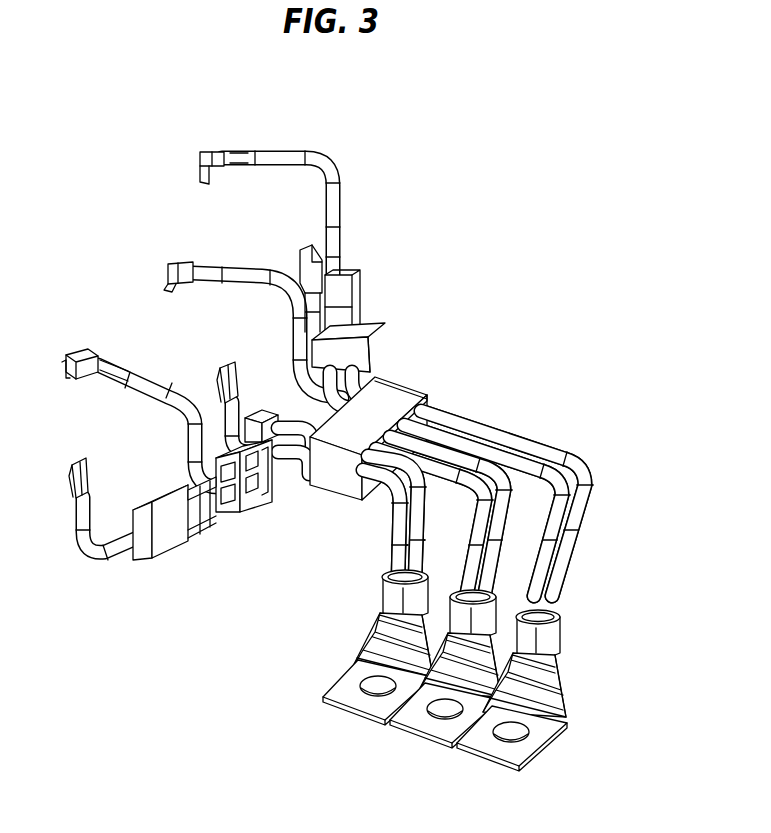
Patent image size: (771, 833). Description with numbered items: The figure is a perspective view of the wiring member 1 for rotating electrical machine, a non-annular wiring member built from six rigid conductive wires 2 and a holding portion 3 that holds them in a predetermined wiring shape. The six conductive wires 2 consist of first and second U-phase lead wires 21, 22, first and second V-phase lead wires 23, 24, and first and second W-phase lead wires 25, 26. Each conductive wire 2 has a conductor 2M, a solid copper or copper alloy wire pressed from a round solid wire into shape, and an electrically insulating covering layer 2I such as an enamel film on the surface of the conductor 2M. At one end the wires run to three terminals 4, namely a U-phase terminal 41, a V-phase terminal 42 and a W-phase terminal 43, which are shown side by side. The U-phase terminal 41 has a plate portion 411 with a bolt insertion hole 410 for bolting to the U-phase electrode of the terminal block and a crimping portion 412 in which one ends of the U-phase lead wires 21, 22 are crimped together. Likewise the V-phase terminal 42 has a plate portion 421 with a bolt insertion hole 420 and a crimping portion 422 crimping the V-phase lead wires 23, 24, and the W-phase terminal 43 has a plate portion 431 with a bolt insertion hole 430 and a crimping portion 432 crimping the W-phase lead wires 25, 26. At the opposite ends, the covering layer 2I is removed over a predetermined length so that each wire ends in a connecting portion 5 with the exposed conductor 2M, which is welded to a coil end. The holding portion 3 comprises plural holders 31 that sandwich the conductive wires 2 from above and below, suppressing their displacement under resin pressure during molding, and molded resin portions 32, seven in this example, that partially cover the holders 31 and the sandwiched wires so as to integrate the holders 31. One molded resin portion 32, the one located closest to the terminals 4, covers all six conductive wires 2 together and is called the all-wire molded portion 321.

The wiring member for rotating electrical machine 1 is at (588, 203).
The conductive wire 2 is at (626, 412).
The conductor 2M is at (236, 152).
The covering layer 2I is at (278, 153).
The first U-phase lead wire 21 is at (342, 195).
The second U-phase lead wire 22 is at (318, 302).
The first V-phase lead wire 23 is at (243, 270).
The second V-phase lead wire 24 is at (221, 402).
The first W-phase lead wire 25 is at (138, 372).
The second W-phase lead wire 26 is at (78, 536).
The holding portion 3 is at (453, 358).
The holder 31 is at (303, 481).
The molded resin portion 32 is at (377, 388).
The all-wire molded portion 321 is at (398, 392).
The terminal 4 is at (318, 656).
The U-phase terminal 41 is at (541, 707).
The bolt insertion hole 410 is at (519, 731).
The plate portion 411 is at (523, 760).
The crimping portion 412 is at (549, 647).
The V-phase terminal 42 is at (495, 692).
The bolt insertion hole 420 is at (447, 713).
The plate portion 421 is at (448, 724).
The crimping portion 422 is at (481, 617).
The W-phase terminal 43 is at (362, 663).
The bolt insertion hole 430 is at (372, 685).
The plate portion 431 is at (363, 703).
The crimping portion 432 is at (390, 594).
The connecting portion 5 is at (75, 462).